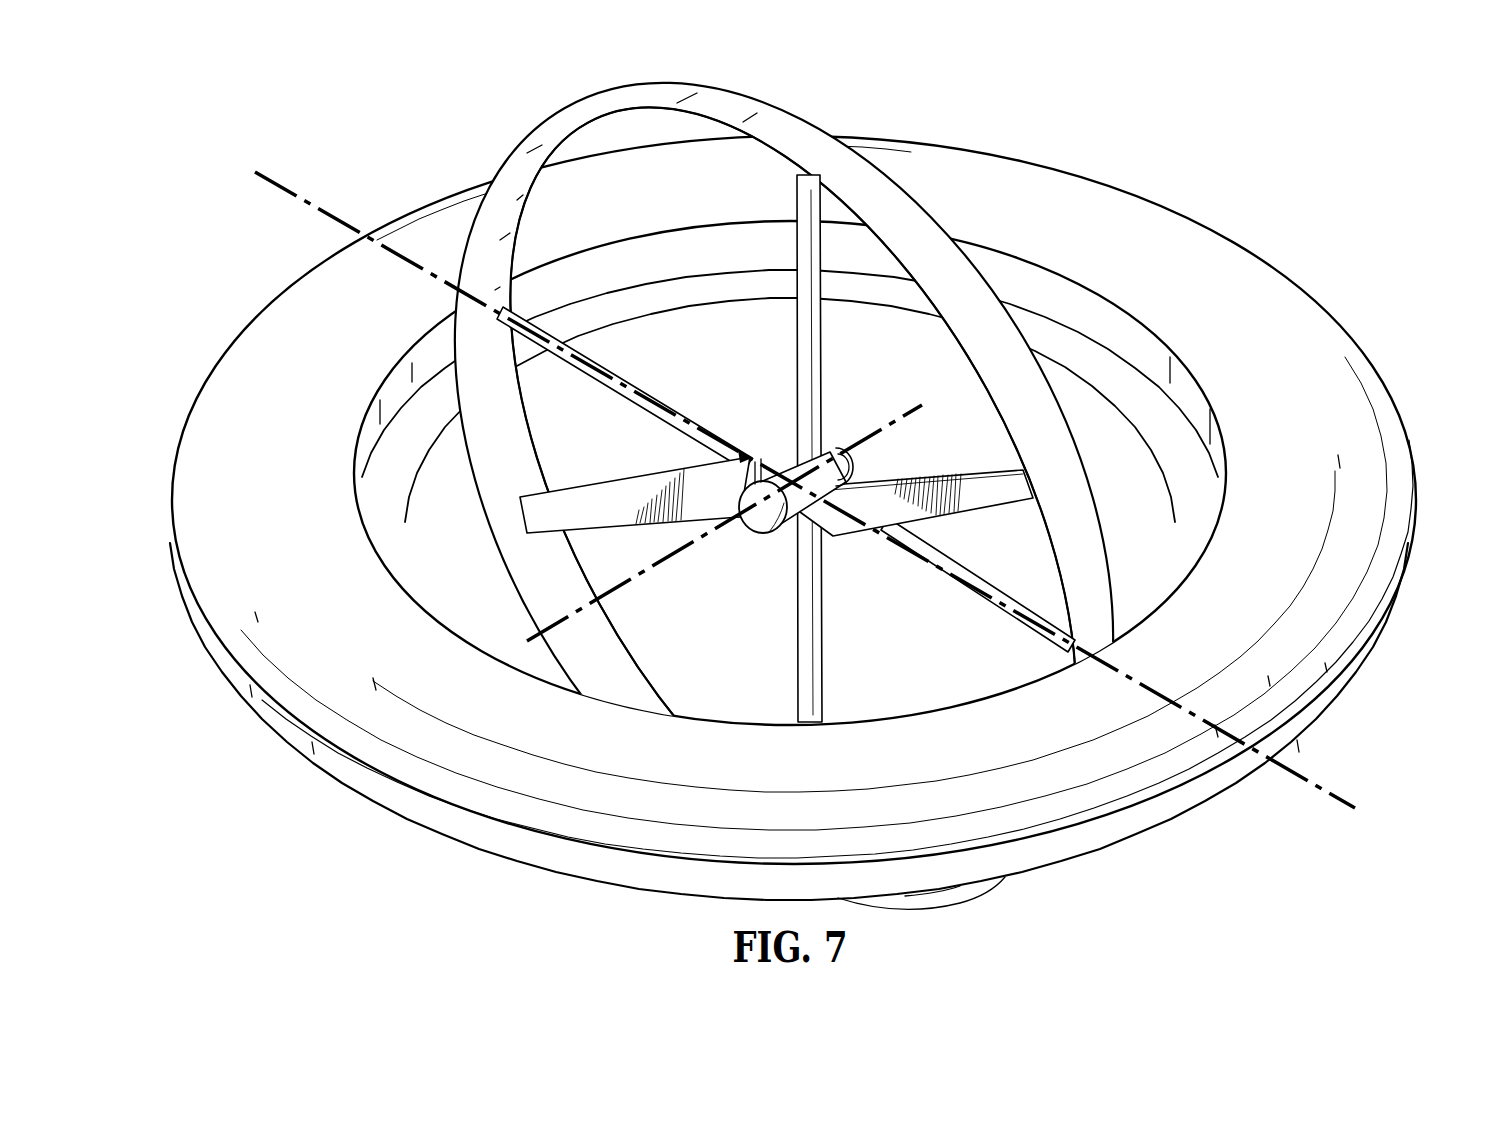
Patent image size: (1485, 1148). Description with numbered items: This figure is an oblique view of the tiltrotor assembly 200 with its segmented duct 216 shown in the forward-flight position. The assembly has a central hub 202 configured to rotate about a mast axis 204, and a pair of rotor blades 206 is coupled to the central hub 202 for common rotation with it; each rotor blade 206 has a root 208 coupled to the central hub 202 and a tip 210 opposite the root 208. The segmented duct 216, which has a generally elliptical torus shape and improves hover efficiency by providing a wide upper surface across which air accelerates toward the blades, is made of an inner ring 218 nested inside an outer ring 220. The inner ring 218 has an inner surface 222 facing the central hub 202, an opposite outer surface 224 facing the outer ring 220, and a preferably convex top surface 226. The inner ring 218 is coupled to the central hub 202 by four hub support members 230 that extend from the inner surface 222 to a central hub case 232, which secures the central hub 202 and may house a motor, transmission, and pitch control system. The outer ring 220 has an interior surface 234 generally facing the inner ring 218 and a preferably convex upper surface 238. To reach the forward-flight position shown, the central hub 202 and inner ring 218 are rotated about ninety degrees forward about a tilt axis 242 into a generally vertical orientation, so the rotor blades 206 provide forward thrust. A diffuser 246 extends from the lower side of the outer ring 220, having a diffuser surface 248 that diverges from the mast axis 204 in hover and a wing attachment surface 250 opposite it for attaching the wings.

The tiltrotor assembly 200 is at (334, 106).
The central hub 202 is at (762, 458).
The mast axis 204 is at (678, 570).
The rotor blades 206 is at (606, 476).
The root 208 is at (771, 531).
The tip 210 is at (520, 514).
The segmented duct 216 is at (270, 283).
The inner ring 218 is at (584, 106).
The outer ring 220 is at (409, 206).
The inner surface 222 is at (511, 401).
The outer surface 224 is at (735, 100).
The top surface 226 is at (520, 157).
The hub support members 230 is at (645, 373).
The central hub case 232 is at (838, 466).
The interior surface 234 is at (1053, 290).
The upper surface 238 is at (236, 372).
The tilt axis 242 is at (1346, 797).
The diffuser 246 is at (231, 692).
The diffuser surface 248 is at (752, 294).
The wing attachment surface 250 is at (297, 738).